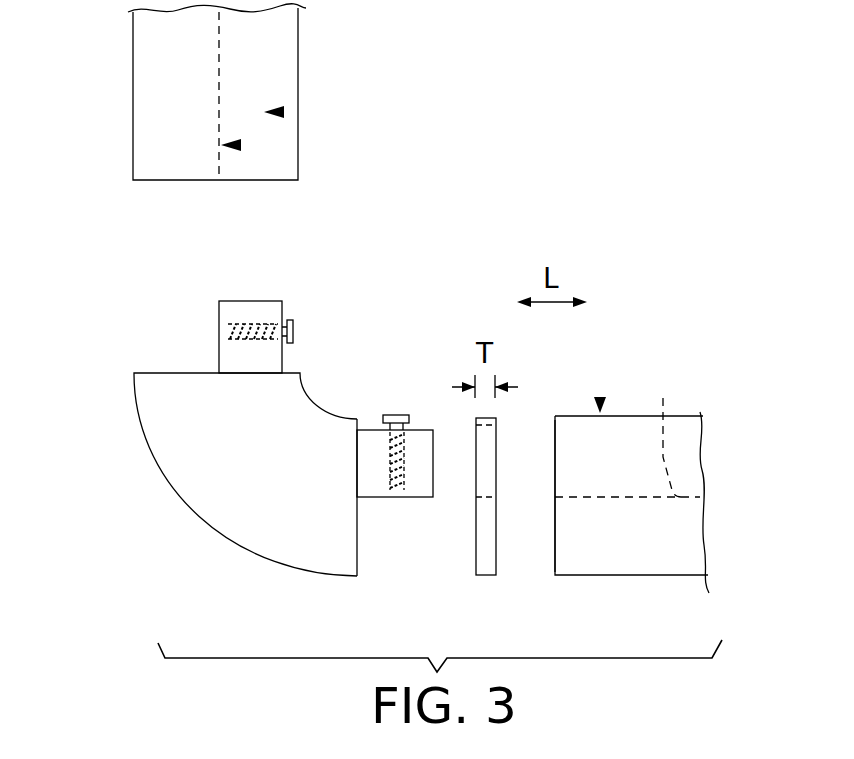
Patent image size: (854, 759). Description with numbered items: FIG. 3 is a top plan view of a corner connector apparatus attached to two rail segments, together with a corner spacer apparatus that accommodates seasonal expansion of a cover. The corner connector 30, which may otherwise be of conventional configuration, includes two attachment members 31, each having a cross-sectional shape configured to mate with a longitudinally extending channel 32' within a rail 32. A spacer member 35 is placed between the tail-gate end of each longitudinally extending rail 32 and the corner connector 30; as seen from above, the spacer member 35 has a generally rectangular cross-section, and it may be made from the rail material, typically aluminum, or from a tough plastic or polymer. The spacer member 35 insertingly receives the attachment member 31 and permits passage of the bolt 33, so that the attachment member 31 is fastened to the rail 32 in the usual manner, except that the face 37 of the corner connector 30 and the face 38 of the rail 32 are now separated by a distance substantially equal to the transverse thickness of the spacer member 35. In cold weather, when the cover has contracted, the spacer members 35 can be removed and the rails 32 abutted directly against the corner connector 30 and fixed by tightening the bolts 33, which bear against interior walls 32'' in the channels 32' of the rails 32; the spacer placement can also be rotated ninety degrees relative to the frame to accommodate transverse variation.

The corner connector 30 is at (202, 502).
The attachment member 31 is at (233, 357).
The rail 32 is at (381, 324).
The longitudinally extending channel 32' is at (451, 256).
The interior wall 32'' is at (457, 318).
The bolt 33 is at (297, 333).
The spacer member 35 is at (484, 568).
The face 37 is at (362, 568).
The face 38 is at (555, 560).